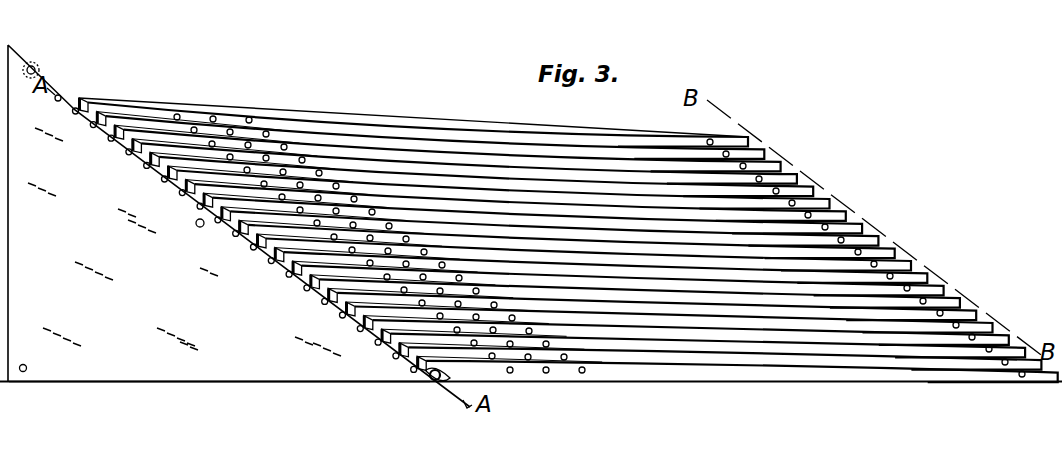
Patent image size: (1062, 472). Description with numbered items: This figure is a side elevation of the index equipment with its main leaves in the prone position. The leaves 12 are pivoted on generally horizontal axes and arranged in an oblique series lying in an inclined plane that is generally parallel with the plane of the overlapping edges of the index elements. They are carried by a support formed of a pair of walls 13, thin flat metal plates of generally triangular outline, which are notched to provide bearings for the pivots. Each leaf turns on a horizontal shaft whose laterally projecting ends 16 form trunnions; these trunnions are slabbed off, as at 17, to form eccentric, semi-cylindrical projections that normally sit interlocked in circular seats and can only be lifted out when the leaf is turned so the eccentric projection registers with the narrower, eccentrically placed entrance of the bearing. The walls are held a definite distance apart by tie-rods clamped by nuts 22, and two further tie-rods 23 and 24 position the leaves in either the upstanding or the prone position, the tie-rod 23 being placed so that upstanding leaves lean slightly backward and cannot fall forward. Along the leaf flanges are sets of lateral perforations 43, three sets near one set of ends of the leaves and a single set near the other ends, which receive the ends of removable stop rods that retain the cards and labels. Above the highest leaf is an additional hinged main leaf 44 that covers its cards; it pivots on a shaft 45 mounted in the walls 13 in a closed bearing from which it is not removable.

The leaves 12 is at (755, 380).
The walls 13 is at (187, 373).
The laterally projecting ends 16 is at (115, 138).
The slabbed-off portion 17 is at (108, 133).
The nuts 22 is at (27, 367).
The tie-rod 23 is at (37, 64).
The tie-rod 24 is at (439, 394).
The lateral perforations 43 is at (177, 114).
The hinged main leaf 44 is at (480, 119).
The shaft 45 is at (61, 95).